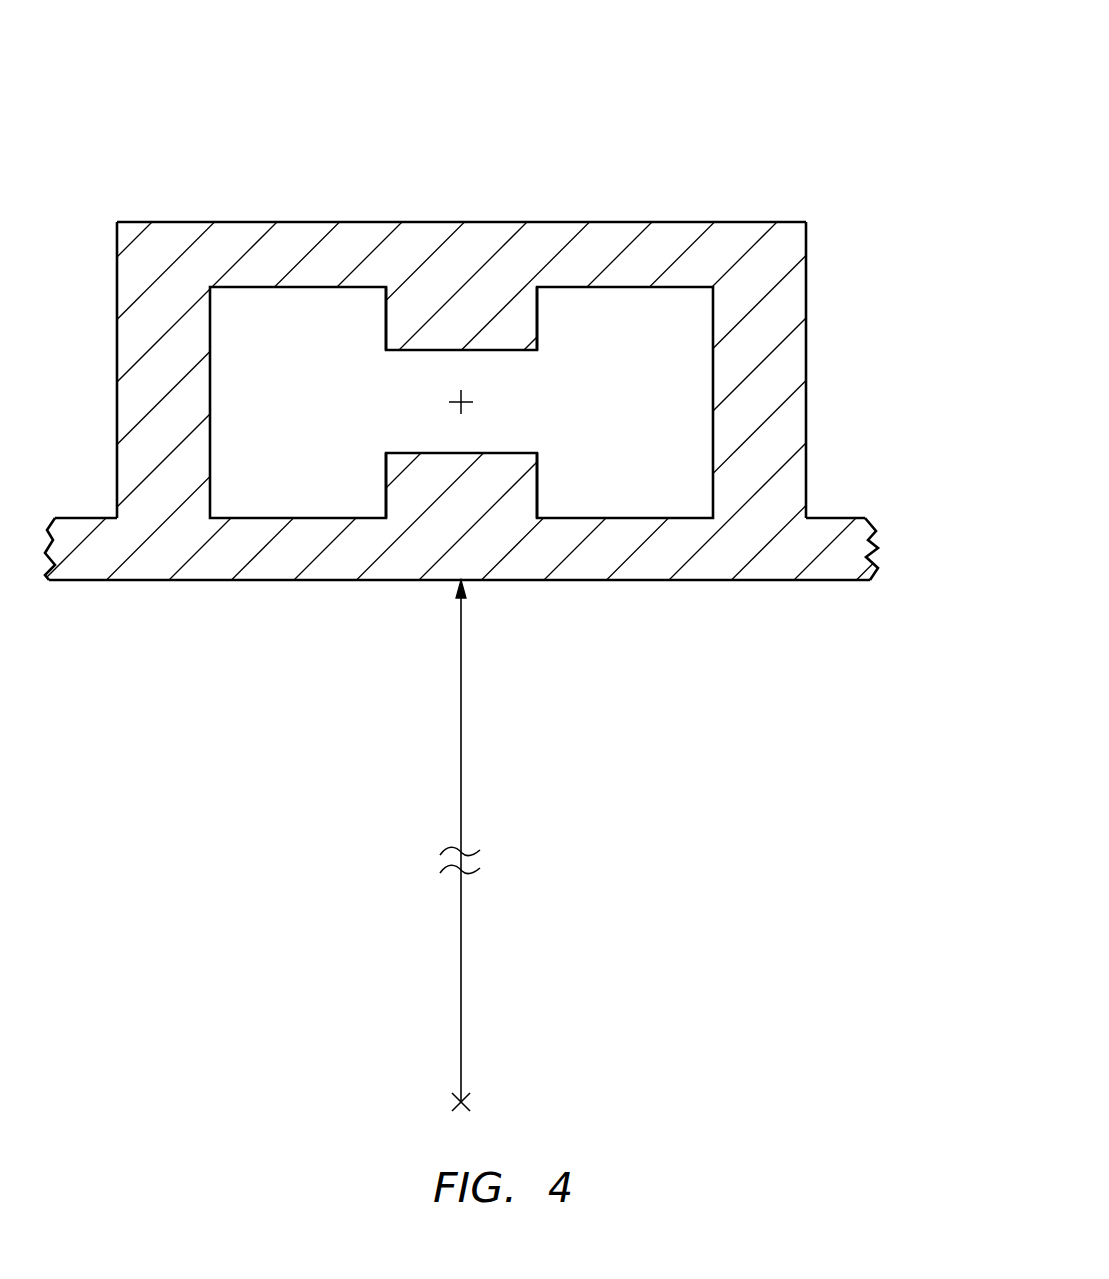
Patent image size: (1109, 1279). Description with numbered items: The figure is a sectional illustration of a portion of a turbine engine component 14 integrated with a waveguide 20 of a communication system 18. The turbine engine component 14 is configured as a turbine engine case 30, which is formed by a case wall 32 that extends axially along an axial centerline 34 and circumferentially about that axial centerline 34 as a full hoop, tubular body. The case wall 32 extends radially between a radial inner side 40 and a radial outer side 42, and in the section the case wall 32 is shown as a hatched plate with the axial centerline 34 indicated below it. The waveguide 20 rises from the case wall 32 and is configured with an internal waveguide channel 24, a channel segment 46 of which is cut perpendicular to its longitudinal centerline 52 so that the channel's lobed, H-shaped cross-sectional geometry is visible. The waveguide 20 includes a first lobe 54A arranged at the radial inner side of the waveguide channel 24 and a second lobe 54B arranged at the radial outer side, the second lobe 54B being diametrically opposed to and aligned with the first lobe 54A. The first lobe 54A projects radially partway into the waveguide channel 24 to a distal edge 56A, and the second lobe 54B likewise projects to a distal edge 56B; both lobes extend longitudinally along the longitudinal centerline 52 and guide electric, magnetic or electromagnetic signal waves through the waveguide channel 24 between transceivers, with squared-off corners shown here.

The turbine engine component 14 is at (554, 569).
The turbine engine case 30 is at (768, 98).
The communication system 18 is at (749, 222).
The waveguide 20 is at (498, 222).
The waveguide channel 24 is at (566, 402).
The channel segment 46 is at (687, 352).
The longitudinal centerline 52 is at (468, 403).
The first lobe 54A is at (538, 465).
The second lobe 54B is at (538, 328).
The distal edge 56A is at (398, 453).
The distal edge 56B is at (398, 351).
The case wall 32 is at (878, 545).
The radial outer side 42 is at (848, 518).
The radial inner side 40 is at (852, 582).
The axial centerline 34 is at (466, 1100).